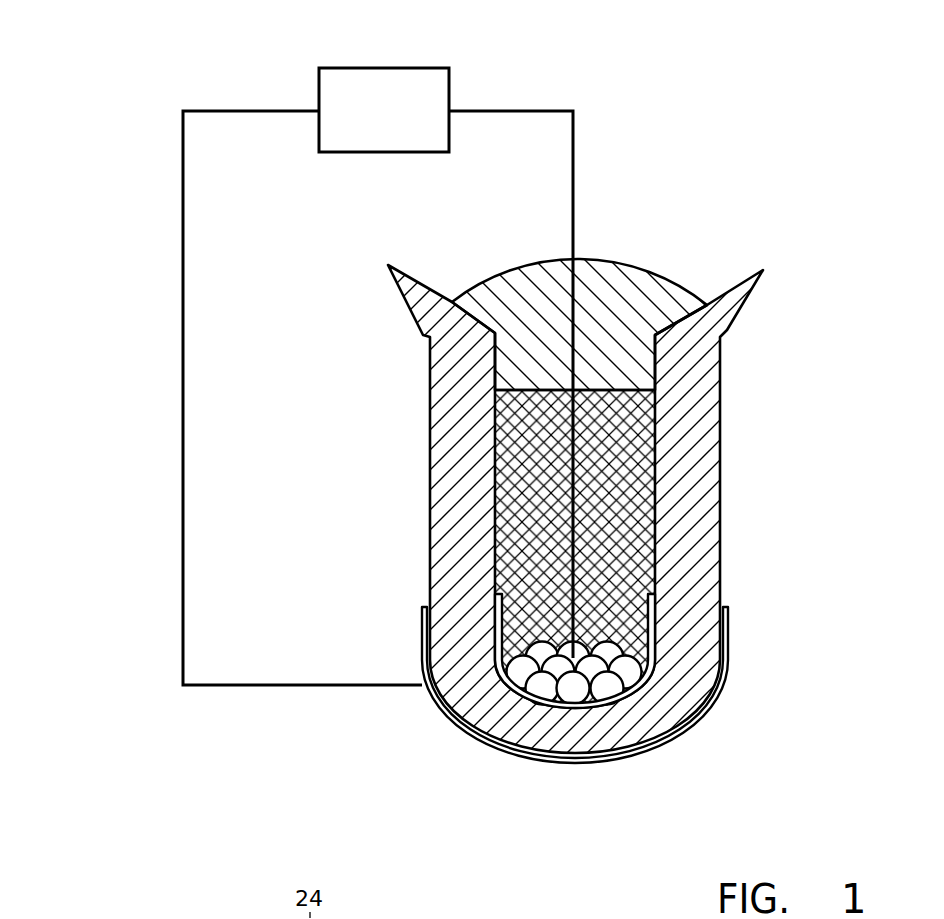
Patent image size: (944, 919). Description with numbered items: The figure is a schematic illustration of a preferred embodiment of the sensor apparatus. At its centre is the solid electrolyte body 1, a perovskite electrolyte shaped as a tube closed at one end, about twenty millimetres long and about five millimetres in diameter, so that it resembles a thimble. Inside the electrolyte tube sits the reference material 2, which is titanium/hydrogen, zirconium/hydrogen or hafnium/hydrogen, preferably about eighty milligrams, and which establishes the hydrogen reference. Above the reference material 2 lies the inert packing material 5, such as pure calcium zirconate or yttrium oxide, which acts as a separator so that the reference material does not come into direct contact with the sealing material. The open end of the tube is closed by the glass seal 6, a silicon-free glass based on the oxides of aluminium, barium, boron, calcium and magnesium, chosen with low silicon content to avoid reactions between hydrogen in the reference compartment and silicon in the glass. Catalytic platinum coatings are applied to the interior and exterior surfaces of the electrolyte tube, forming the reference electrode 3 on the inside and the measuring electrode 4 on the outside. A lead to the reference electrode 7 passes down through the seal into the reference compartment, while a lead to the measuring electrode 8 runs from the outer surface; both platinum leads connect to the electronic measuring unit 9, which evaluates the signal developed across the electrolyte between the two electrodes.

The solid electrolyte body 1 is at (672, 700).
The reference material 2 is at (570, 690).
The reference electrode 3 is at (482, 712).
The measuring electrode 4 is at (727, 634).
The inert packing material 5 is at (640, 450).
The glass seal 6 is at (605, 300).
The lead to the reference electrode 7 is at (575, 150).
The lead to the measuring electrode 8 is at (183, 197).
The electronic measuring unit 9 is at (376, 96).